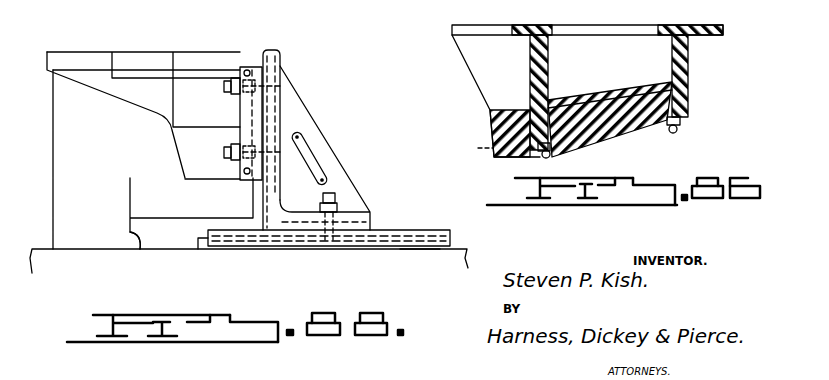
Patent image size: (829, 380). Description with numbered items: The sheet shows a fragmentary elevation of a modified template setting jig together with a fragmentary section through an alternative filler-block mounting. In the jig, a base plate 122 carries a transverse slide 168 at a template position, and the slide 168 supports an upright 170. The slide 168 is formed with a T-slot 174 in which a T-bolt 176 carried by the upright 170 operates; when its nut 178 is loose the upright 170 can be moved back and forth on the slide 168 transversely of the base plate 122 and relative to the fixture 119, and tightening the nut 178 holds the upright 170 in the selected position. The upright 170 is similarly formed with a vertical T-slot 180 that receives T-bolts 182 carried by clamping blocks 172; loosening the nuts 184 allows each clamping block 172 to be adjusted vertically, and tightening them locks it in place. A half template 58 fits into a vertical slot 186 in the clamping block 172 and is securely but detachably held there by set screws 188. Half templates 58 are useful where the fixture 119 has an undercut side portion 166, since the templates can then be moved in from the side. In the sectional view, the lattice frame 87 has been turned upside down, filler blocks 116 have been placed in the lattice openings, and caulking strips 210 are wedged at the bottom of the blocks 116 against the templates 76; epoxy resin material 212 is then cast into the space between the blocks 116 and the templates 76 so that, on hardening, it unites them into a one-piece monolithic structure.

In FIG. 22, the template 58 is at (193, 51).
In FIG. 22, the fixture 119 is at (60, 117).
In FIG. 22, the clamping block 172 is at (243, 105).
In FIG. 22, the set screw 188 is at (240, 173).
In FIG. 22, the T-bolt 182 is at (225, 152).
In FIG. 22, the nut 184 is at (237, 145).
In FIG. 22, the vertical T-slot 180 is at (285, 92).
In FIG. 22, the vertical slot 186 is at (288, 110).
In FIG. 22, the upright 170 is at (367, 219).
In FIG. 22, the T-bolt 176 is at (330, 195).
In FIG. 22, the nut 178 is at (338, 206).
In FIG. 22, the transverse slide 168 is at (450, 232).
In FIG. 22, the base plate 122 is at (467, 253).
In FIG. 22, the T-slot 174 is at (402, 251).
In FIG. 22, the undercut side portion 166 is at (140, 249).
In FIG. 26, the lattice frame 87 is at (706, 59).
In FIG. 26, the template 76 is at (686, 75).
In FIG. 26, the filler block 116 is at (598, 143).
In FIG. 26, the caulking strip 210 is at (542, 157).
In FIG. 26, the epoxy resin material 212 is at (692, 118).